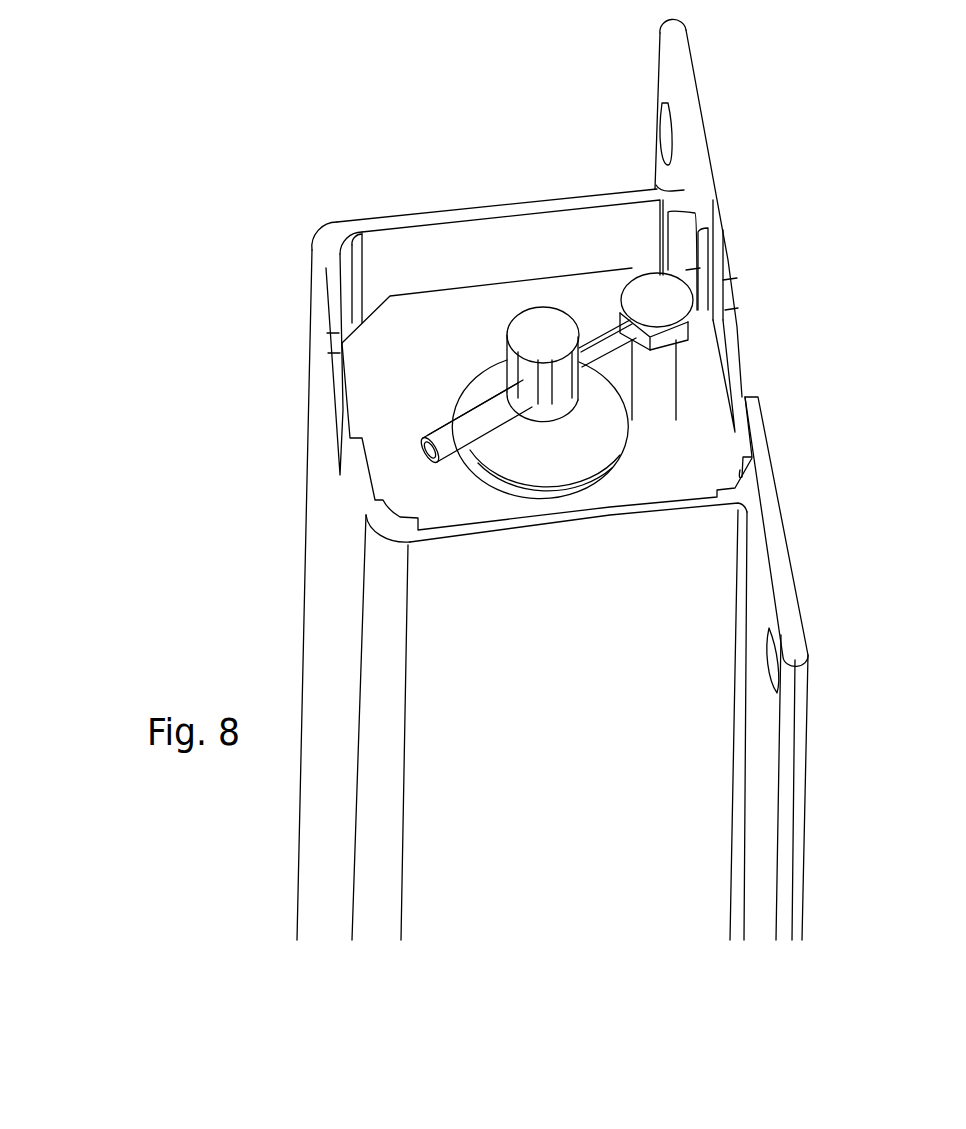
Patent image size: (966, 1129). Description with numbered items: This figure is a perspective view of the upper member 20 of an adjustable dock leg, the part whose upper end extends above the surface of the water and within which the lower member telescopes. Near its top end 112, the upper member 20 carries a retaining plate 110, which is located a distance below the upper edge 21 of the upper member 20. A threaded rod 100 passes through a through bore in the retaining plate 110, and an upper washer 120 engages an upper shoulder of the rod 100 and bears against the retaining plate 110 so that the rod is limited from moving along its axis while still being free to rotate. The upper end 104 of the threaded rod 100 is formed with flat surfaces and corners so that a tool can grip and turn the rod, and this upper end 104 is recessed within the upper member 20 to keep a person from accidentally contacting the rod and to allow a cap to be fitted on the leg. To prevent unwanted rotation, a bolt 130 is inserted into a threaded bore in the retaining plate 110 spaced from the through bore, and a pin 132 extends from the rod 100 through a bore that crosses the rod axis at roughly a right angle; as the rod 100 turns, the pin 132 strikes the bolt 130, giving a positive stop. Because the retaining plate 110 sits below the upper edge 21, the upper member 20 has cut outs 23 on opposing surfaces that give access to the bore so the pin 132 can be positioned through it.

The upper member 20 is at (553, 680).
The upper edge 21 is at (758, 488).
The cut outs 23 is at (335, 397).
The threaded rod 100 is at (530, 343).
The upper end 104 is at (560, 367).
The retaining plate 110 is at (708, 402).
The top end 112 is at (337, 243).
The upper washer 120 is at (537, 448).
The bolt 130 is at (653, 295).
The pin 132 is at (432, 437).